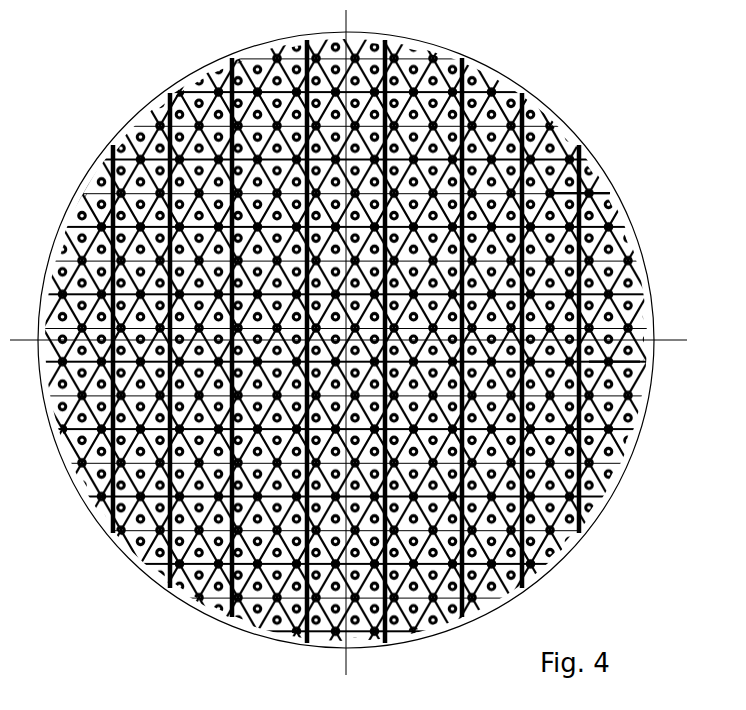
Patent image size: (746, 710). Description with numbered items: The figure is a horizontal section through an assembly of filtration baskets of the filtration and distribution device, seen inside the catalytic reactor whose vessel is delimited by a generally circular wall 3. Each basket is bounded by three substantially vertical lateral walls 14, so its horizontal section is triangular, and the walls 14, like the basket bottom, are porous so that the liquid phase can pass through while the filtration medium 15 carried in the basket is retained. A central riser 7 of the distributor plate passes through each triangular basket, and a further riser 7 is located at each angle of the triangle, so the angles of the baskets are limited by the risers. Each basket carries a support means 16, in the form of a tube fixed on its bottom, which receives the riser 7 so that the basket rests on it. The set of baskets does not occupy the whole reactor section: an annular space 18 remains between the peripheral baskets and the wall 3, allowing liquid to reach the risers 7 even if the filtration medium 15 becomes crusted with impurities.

The wall 3 is at (573, 131).
The riser 7 is at (630, 260).
The vertical lateral walls 14 is at (597, 207).
The filtration medium 15 is at (638, 357).
The support means 16 is at (612, 447).
The annular space 18 is at (158, 114).